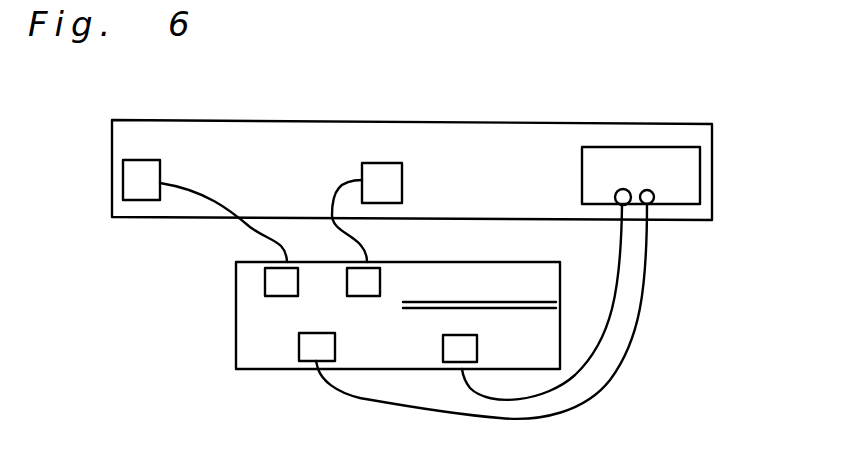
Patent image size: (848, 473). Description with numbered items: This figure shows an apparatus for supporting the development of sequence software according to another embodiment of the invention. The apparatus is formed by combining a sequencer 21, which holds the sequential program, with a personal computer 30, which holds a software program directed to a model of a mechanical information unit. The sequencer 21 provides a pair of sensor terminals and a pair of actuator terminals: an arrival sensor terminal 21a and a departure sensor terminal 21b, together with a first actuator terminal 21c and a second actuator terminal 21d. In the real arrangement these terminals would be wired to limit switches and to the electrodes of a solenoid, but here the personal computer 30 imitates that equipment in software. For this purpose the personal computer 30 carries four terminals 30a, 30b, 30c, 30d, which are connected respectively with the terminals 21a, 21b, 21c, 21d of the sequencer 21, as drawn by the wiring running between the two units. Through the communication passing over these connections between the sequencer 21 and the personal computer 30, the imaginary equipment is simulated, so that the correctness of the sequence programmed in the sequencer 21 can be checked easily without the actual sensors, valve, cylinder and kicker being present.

The personal computer 30 is at (276, 139).
The terminal of the personal computer 30a is at (143, 175).
The terminal of the personal computer 30b is at (385, 178).
The terminal of the personal computer 30c is at (619, 190).
The terminal of the personal computer 30d is at (648, 197).
The sequencer 21 is at (248, 337).
The arrival sensor terminal 21a is at (265, 285).
The departure sensor terminal 21b is at (379, 285).
The first actuator terminal 21c is at (312, 348).
The second actuator terminal 21d is at (458, 357).